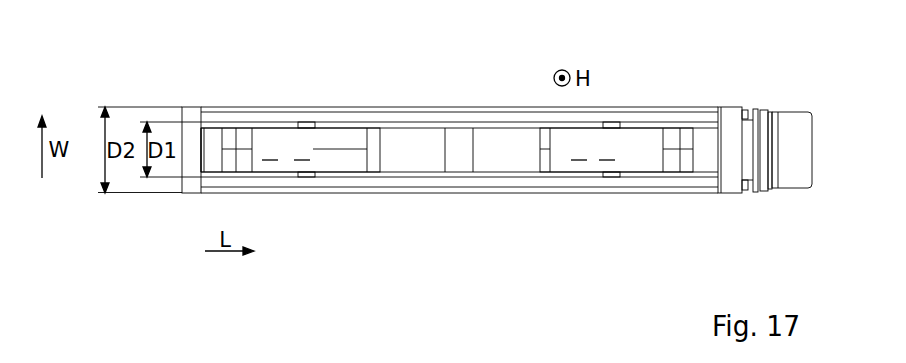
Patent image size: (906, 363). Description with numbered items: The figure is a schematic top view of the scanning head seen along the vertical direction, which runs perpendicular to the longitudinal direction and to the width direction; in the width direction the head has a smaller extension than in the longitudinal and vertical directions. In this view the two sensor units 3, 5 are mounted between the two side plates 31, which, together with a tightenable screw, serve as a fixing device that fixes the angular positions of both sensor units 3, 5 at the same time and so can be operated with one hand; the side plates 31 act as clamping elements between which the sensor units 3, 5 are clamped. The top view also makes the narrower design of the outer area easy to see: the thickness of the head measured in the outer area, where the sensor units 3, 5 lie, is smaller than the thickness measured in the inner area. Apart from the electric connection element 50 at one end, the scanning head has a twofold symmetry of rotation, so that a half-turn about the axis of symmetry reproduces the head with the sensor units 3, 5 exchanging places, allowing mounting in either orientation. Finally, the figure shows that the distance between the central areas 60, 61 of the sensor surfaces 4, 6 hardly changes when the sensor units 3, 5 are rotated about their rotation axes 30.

The rotation axes 30 is at (306, 105).
The side plates 31 is at (487, 121).
The electric connection element 50 is at (783, 212).
The central area 60 is at (616, 122).
The central area 61 is at (295, 121).
The sensor unit 3 is at (579, 147).
The sensor surface 4 is at (631, 138).
The sensor unit 5 is at (270, 147).
The sensor surface 6 is at (302, 147).